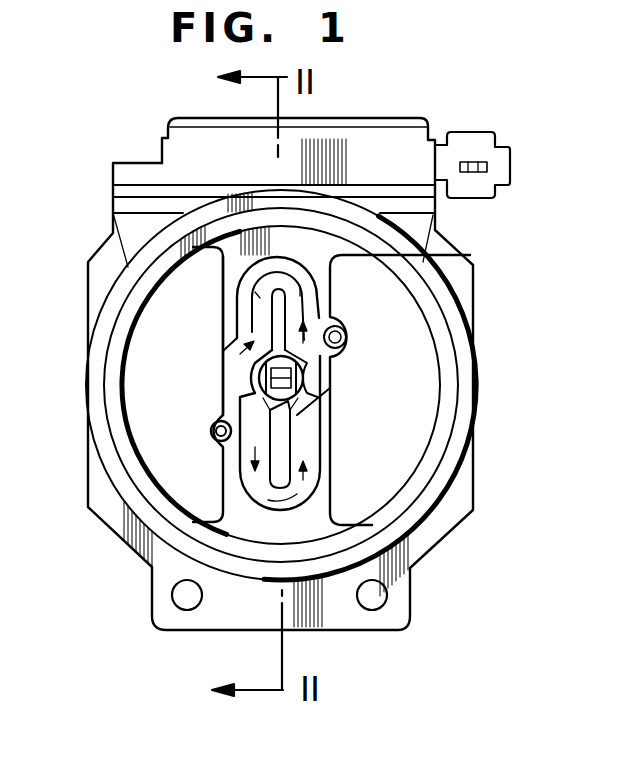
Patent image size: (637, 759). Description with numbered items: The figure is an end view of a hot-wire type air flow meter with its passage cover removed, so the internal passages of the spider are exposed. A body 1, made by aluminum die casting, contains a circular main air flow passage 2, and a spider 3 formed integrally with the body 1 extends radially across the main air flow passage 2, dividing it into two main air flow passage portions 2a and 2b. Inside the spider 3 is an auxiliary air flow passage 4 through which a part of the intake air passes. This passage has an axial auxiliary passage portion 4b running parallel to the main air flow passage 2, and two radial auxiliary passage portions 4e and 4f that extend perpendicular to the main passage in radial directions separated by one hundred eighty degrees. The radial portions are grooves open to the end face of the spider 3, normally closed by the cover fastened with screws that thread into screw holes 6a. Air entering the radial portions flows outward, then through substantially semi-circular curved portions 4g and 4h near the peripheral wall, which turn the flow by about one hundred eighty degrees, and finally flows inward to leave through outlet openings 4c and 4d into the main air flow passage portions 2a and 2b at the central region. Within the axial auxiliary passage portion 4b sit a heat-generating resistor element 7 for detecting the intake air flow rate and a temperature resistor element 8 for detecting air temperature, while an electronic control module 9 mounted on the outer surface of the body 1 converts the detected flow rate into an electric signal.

The body 1 is at (135, 530).
The main air flow passage 2 is at (148, 390).
The main air flow passage portion 2a is at (407, 383).
The main air flow passage portion 2b is at (163, 447).
The spider 3 is at (214, 289).
The auxiliary air flow passage 4 is at (262, 505).
The axial auxiliary passage portion 4b is at (255, 415).
The outlet opening 4c is at (375, 463).
The outlet opening 4d is at (212, 351).
The radial auxiliary passage portion 4e is at (240, 480).
The radial auxiliary passage portion 4f is at (318, 303).
The curved portion 4g is at (290, 497).
The curved portion 4h is at (445, 257).
The screw holes 6a is at (208, 424).
The heat-generating resistor element 7 is at (333, 408).
The temperature resistor element 8 is at (262, 366).
The electronic control module 9 is at (395, 157).